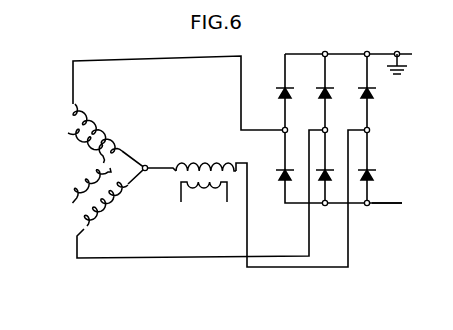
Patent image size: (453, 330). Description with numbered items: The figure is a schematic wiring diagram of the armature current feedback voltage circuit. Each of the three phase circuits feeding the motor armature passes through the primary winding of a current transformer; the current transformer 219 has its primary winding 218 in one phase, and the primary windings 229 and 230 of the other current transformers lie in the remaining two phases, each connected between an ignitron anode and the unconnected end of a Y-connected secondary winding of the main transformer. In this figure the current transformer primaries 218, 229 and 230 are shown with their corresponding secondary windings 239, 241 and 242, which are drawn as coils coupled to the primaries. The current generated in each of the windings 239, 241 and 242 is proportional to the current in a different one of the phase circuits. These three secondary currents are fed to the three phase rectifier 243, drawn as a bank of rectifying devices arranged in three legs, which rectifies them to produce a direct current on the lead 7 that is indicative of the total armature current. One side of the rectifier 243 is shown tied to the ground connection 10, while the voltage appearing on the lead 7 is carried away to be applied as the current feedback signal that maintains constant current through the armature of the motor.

The current transformer 219 is at (65, 113).
The secondary winding 239 is at (108, 121).
The secondary winding 242 is at (116, 208).
The primary winding 218 is at (86, 152).
The primary winding 230 is at (88, 189).
The secondary winding 241 is at (197, 161).
The primary winding 229 is at (211, 197).
The three phase rectifier 243 is at (358, 118).
The ground connection 10 is at (380, 54).
The lead 7 is at (378, 203).